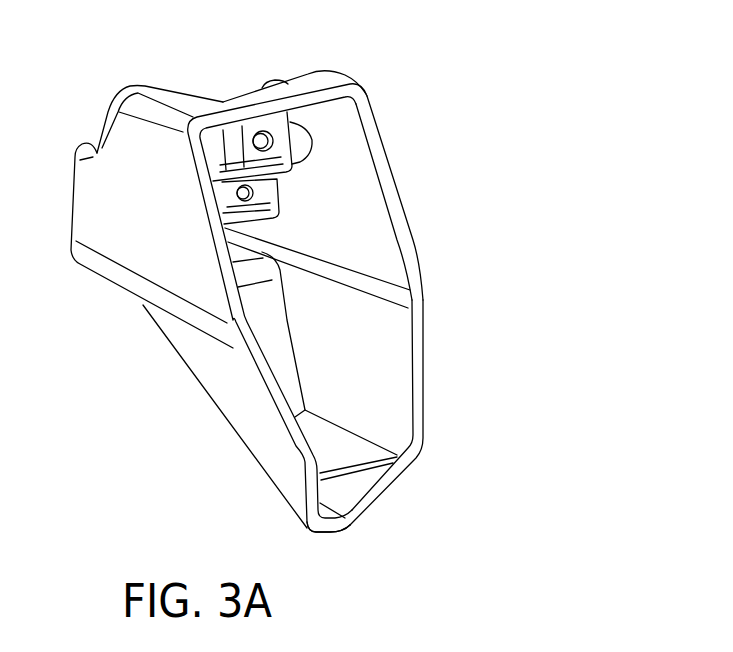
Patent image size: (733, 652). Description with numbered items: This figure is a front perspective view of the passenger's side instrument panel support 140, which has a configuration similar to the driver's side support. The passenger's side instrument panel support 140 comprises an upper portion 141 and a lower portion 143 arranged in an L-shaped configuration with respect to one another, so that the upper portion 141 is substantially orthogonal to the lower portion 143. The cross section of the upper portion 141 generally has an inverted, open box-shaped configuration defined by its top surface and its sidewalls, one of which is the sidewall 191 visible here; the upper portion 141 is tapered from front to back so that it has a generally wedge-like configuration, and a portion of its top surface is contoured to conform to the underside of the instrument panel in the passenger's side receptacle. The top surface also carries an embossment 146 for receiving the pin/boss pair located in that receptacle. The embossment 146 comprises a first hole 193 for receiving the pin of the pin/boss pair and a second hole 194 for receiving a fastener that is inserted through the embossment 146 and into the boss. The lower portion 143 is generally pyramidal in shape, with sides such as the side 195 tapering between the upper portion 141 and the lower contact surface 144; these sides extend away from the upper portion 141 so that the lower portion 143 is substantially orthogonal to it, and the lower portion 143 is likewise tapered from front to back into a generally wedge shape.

The passenger's side instrument panel support 140 is at (390, 66).
The upper portion 141 is at (380, 92).
The lower portion 143 is at (433, 312).
The lower contact surface 144 is at (328, 533).
The embossment 146 is at (262, 124).
The sidewall 191 is at (202, 255).
The first hole 193 is at (253, 142).
The second hole 194 is at (233, 193).
The side 195 is at (240, 391).